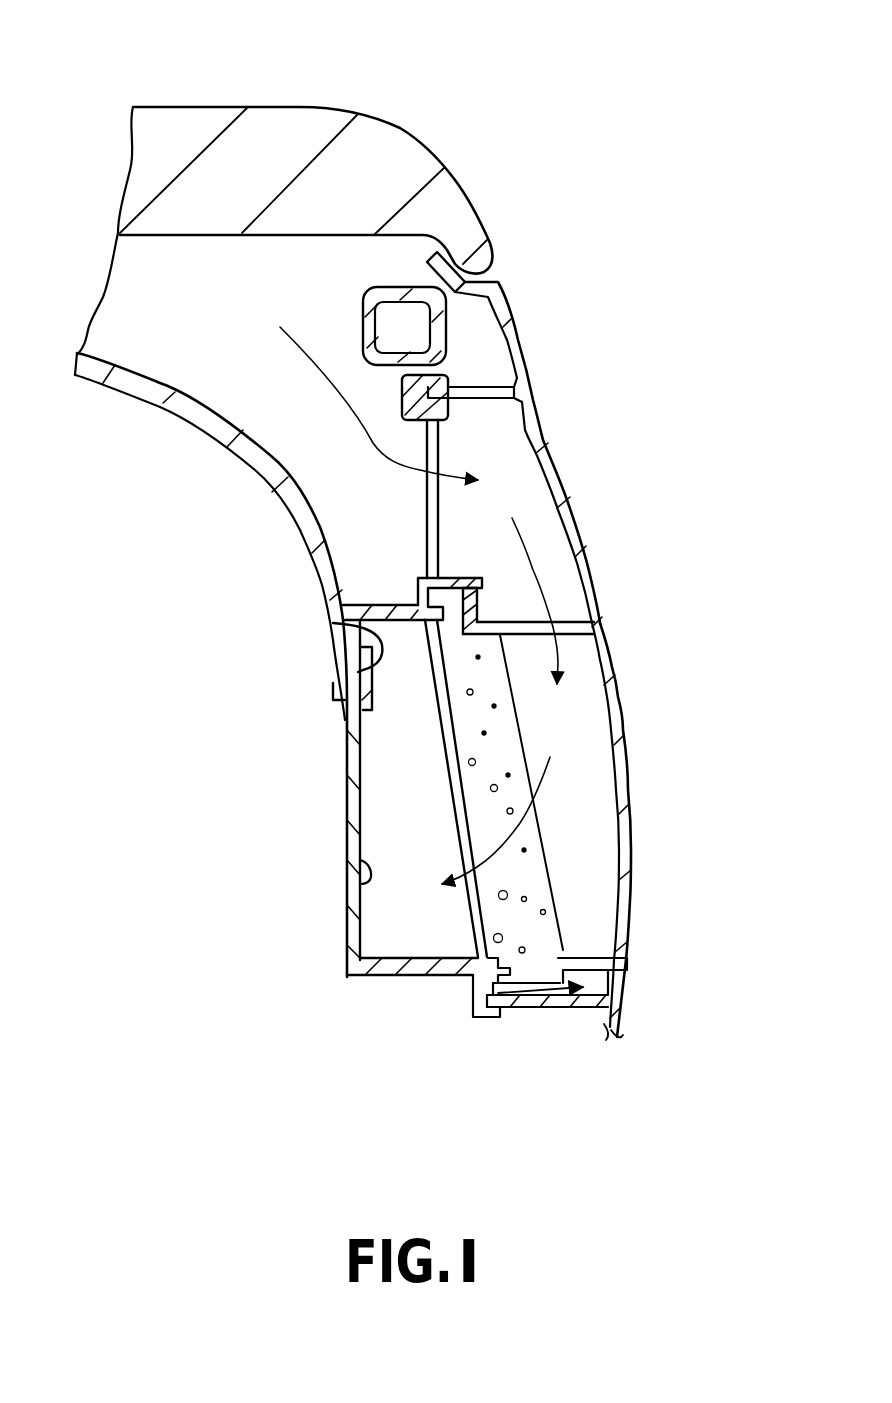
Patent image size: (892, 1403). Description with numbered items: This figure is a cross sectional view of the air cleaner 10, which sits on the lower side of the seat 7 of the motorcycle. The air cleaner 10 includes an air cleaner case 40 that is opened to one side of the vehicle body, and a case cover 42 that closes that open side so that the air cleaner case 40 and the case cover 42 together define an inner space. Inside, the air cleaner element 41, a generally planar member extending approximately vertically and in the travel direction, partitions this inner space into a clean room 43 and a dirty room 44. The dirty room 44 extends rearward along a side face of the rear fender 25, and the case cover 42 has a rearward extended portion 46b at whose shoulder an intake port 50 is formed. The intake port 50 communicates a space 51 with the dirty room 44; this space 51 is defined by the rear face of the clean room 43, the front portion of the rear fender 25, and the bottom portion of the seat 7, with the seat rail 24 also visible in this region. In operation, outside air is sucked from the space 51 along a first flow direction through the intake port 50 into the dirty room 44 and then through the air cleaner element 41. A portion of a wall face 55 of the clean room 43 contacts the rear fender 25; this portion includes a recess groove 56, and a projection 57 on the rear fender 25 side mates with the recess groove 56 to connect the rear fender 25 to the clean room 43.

The seat 7 is at (185, 107).
The space 51 is at (170, 308).
The rear fender 25 is at (117, 393).
The seat rail 24 is at (362, 303).
The intake port 50 is at (427, 527).
The rearward extended portion 46b is at (582, 527).
The case cover 42 is at (615, 707).
The dirty room 44 is at (590, 812).
The air cleaner element 41 is at (538, 897).
The projection 57 is at (333, 623).
The recess groove 56 is at (343, 681).
The air cleaner case 40 is at (347, 773).
The wall face 55 is at (363, 880).
The clean room 43 is at (387, 940).
The air cleaner 10 is at (318, 951).